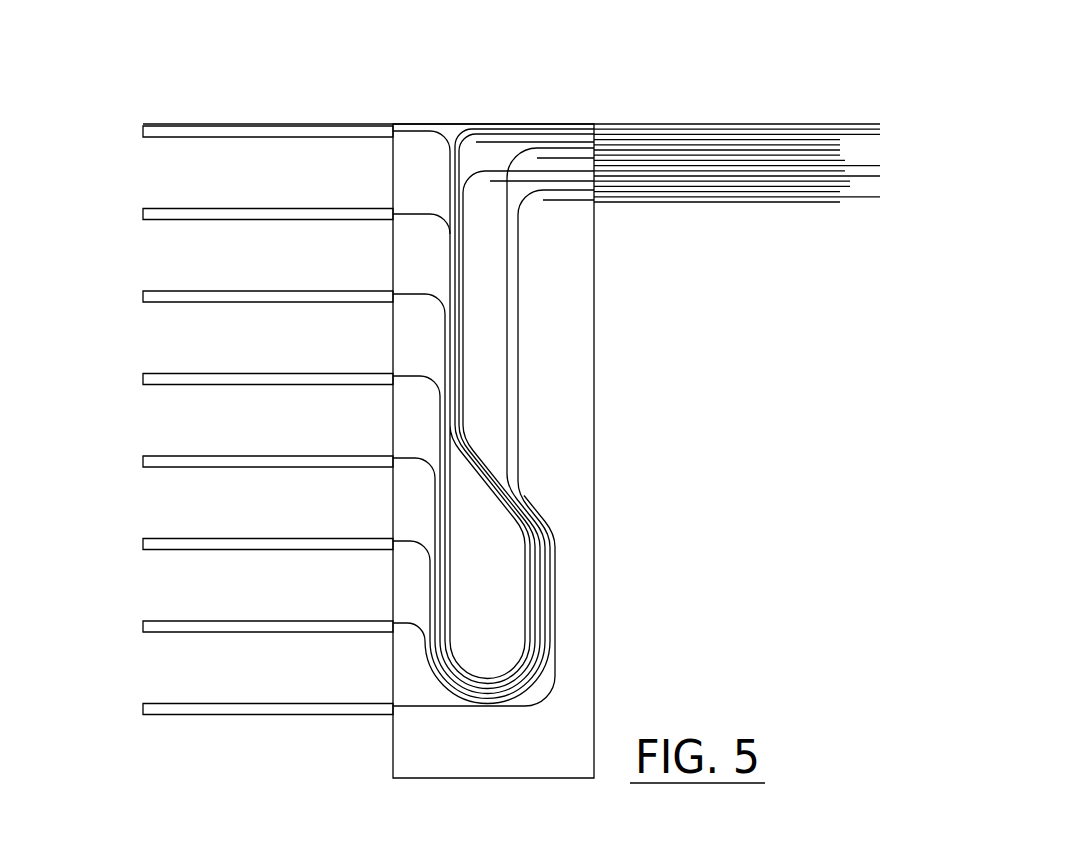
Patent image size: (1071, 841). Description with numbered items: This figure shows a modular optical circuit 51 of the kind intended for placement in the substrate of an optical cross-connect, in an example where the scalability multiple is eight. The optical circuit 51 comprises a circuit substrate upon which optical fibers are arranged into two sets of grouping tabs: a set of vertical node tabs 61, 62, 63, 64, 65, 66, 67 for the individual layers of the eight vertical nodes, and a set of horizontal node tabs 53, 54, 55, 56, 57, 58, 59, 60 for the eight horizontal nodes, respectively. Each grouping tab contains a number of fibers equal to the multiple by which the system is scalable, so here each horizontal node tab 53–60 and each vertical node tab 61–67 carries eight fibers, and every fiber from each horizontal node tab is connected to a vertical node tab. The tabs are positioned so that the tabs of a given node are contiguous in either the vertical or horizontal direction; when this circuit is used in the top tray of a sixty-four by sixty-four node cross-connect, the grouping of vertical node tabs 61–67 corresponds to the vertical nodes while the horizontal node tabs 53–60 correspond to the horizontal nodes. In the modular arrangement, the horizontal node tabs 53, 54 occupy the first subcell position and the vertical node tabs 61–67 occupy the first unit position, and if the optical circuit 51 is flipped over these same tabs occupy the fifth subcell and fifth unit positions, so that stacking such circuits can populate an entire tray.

The optical circuit 51 is at (493, 82).
The horizontal node tab 53 is at (142, 132).
The horizontal node tab 54 is at (142, 214).
The horizontal node tab 55 is at (142, 296).
The horizontal node tab 56 is at (142, 379).
The horizontal node tab 57 is at (142, 462).
The horizontal node tab 58 is at (142, 544).
The horizontal node tab 59 is at (142, 626).
The horizontal node tab 60 is at (142, 709).
The vertical node tab 61 is at (847, 122).
The vertical node tab 62 is at (860, 135).
The vertical node tab 63 is at (842, 150).
The vertical node tab 64 is at (878, 166).
The vertical node tab 65 is at (863, 178).
The vertical node tab 66 is at (852, 188).
The vertical node tab 67 is at (843, 200).